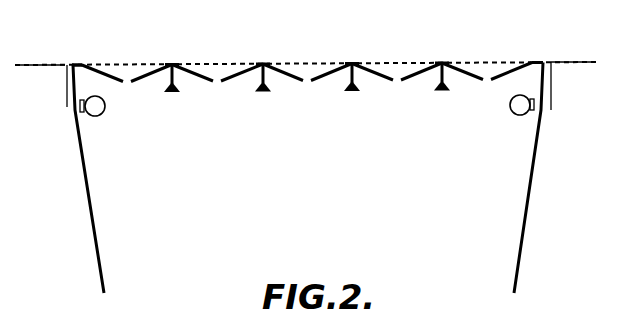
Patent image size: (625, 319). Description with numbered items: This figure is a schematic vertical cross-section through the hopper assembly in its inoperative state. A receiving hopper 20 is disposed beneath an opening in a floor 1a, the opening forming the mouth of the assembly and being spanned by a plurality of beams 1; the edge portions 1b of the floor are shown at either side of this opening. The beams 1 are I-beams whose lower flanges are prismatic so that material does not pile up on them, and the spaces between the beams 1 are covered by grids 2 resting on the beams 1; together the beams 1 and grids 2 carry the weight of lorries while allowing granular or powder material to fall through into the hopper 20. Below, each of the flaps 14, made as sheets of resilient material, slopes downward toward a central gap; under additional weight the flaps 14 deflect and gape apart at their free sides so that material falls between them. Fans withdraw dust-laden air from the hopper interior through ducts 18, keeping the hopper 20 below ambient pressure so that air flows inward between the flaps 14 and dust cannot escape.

The beam 1 is at (172, 62).
The floor 1a is at (43, 67).
The corner portion 1b is at (75, 63).
The grid 2 is at (208, 63).
The flap 14 is at (121, 84).
The duct 18 is at (103, 113).
The receiving hopper 20 is at (525, 242).